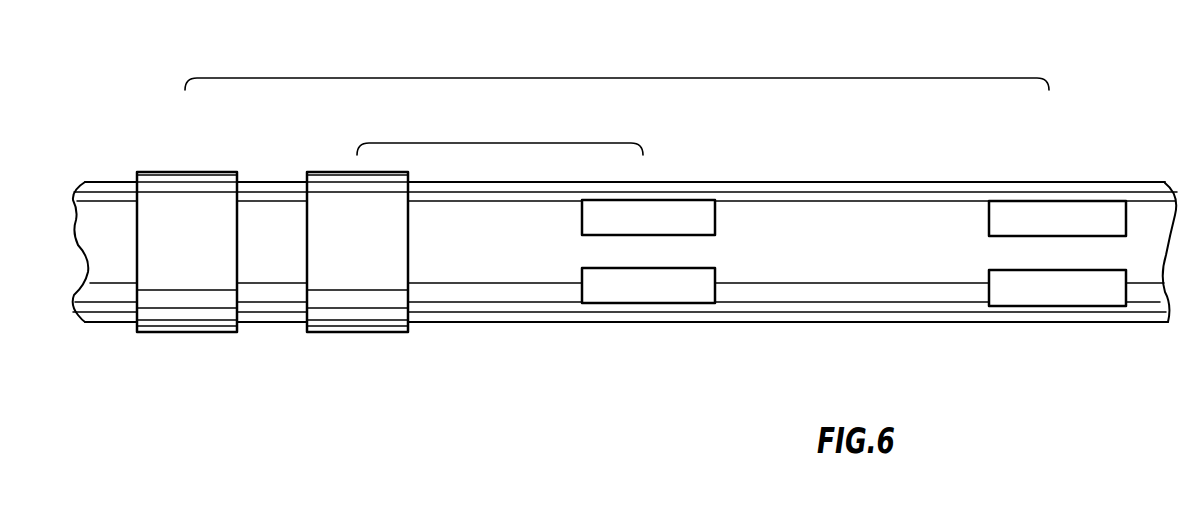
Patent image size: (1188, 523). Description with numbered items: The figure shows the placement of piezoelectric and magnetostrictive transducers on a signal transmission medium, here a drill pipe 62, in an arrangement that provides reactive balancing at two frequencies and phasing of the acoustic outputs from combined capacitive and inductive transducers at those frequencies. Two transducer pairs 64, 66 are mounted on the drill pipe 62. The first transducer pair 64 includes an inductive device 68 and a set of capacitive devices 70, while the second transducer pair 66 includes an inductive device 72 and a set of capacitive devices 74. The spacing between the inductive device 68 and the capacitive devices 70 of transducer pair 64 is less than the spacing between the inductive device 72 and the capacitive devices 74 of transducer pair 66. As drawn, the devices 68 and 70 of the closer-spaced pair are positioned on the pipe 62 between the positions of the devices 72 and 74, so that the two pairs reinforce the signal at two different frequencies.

The drill pipe 62 is at (818, 323).
The transducer pair 64 is at (492, 143).
The transducer pair 66 is at (588, 78).
The inductive device 68 is at (345, 333).
The set of capacitive devices 70 is at (660, 295).
The inductive device 72 is at (160, 333).
The set of capacitive devices 74 is at (1023, 303).